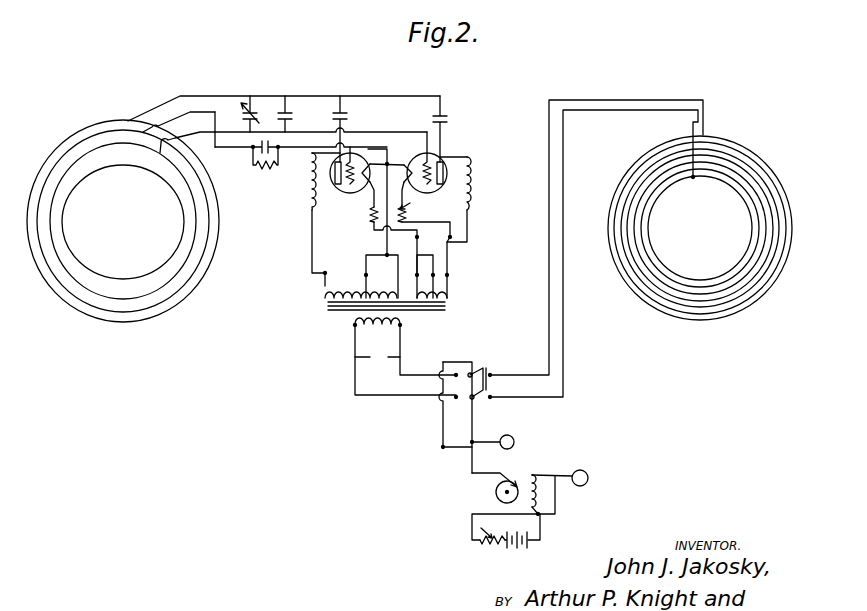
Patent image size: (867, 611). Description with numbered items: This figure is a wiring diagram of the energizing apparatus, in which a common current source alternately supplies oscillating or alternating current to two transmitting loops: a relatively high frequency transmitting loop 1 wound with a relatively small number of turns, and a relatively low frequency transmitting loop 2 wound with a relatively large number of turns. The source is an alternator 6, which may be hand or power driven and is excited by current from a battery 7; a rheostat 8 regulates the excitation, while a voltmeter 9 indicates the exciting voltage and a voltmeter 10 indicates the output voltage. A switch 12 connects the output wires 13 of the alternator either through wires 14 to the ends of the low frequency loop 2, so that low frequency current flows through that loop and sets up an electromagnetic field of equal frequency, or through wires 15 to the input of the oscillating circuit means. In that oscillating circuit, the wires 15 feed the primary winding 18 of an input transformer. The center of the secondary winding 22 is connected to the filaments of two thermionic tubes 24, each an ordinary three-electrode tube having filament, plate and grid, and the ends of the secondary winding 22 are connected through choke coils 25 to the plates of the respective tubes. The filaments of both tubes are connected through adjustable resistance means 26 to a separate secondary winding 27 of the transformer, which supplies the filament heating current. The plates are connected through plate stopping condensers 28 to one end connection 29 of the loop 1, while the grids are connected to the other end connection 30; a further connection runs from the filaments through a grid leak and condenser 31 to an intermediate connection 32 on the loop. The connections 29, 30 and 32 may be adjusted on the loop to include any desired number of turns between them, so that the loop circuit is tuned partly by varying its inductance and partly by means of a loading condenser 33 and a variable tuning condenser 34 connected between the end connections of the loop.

The high frequency transmitting loop 1 is at (68, 251).
The low frequency transmitting loop 2 is at (655, 197).
The alternator 6 is at (519, 477).
The battery 7 is at (516, 552).
The rheostat 8 is at (486, 548).
The voltmeter 9 is at (588, 476).
The voltmeter 10 is at (514, 438).
The switch 12 is at (480, 368).
The output wires 13 is at (470, 421).
The wires 14 is at (551, 340).
The wires 15 is at (405, 360).
The primary winding 18 is at (369, 329).
The secondary winding 22 is at (324, 280).
The thermionic tubes 24 is at (425, 158).
The choke coils 25 is at (306, 188).
The adjustable resistance means 26 is at (399, 215).
The secondary winding 27 is at (448, 293).
The plate stopping condensers 28 is at (430, 114).
The end connection 29 is at (128, 118).
The end connection 30 is at (128, 165).
The grid leak and condenser 31 is at (262, 174).
The intermediate connection 32 is at (127, 145).
The loading condenser 33 is at (288, 104).
The variable tuning condenser 34 is at (254, 100).